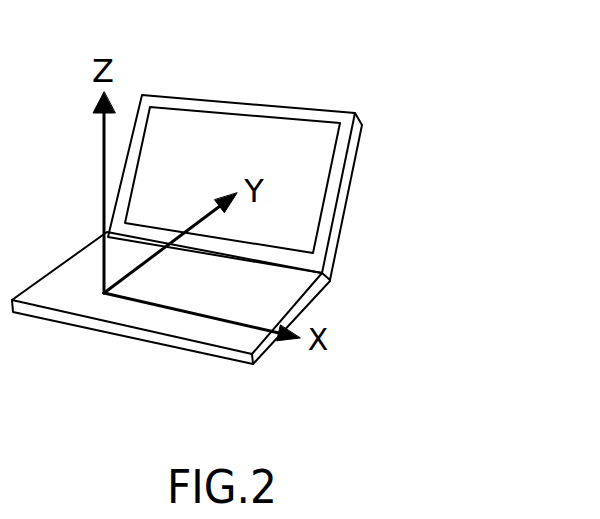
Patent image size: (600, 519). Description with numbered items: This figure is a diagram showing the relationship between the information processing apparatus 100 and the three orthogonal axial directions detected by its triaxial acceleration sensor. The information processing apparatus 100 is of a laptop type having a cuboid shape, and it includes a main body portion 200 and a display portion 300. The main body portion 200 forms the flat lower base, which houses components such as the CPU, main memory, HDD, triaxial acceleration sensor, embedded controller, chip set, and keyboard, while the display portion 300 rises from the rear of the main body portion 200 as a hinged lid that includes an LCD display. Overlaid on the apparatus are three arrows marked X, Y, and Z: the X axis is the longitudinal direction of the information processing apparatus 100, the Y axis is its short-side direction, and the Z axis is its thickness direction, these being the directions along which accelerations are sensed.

The information processing apparatus 100 is at (252, 223).
The main body portion 200 is at (147, 318).
The display portion 300 is at (238, 102).